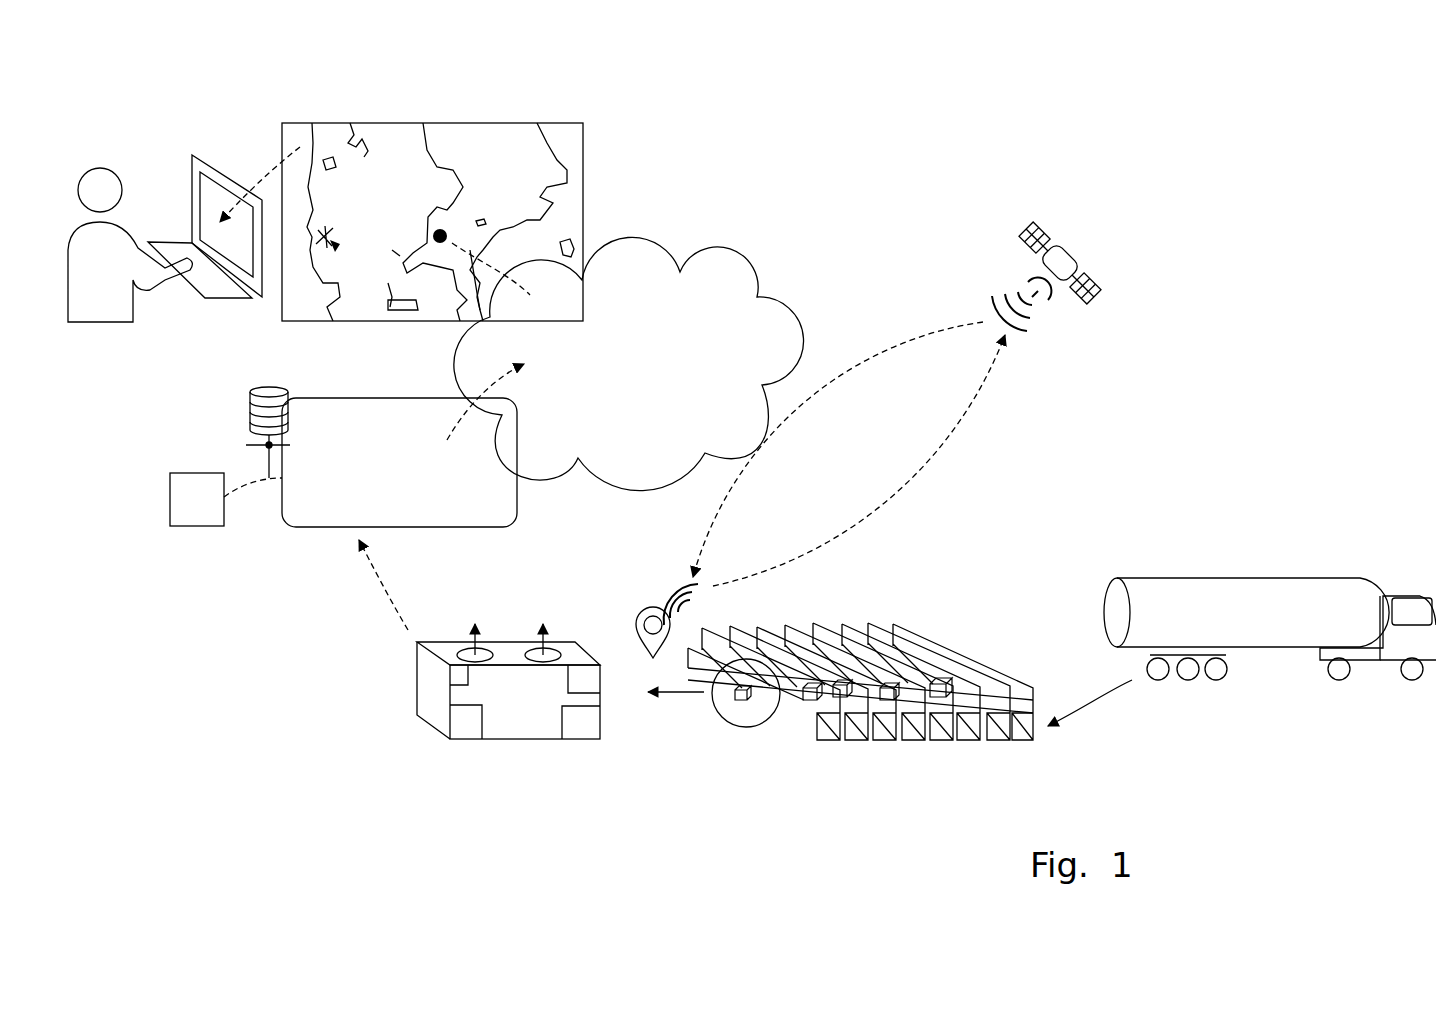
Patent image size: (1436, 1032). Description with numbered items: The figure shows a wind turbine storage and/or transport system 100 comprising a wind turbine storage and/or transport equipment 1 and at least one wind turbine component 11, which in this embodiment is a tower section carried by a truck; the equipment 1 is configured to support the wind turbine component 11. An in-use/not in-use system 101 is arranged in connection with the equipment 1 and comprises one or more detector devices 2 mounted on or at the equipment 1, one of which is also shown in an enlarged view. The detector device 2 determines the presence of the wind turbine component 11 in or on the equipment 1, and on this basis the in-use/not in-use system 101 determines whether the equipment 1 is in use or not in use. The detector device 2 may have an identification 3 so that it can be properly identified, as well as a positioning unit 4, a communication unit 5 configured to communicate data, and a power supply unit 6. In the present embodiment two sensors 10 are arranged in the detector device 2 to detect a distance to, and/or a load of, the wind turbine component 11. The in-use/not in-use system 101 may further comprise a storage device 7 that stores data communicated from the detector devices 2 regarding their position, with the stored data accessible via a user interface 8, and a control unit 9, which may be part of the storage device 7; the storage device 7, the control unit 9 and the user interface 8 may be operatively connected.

The wind turbine storage and/or transport equipment 1 is at (812, 750).
The detector device 2 is at (418, 686).
The identification 3 is at (458, 676).
The positioning unit 4 is at (648, 608).
The communication unit 5 is at (589, 724).
The power supply unit 6 is at (602, 712).
The storage device 7 is at (306, 544).
The user interface 8 is at (228, 150).
The control unit 9 is at (193, 528).
The sensor 10 is at (482, 648).
The wind turbine component 11 is at (1188, 604).
The wind turbine storage and/or transport system 100 is at (860, 226).
The in-use/not in-use system 101 is at (510, 814).